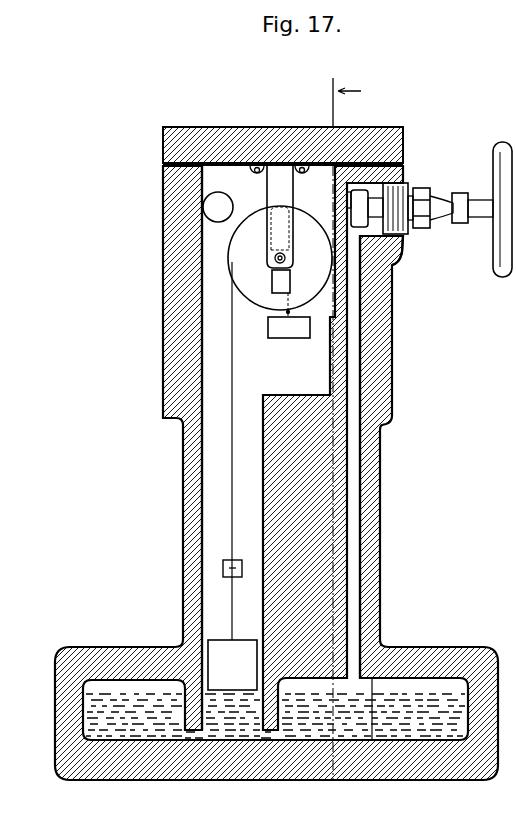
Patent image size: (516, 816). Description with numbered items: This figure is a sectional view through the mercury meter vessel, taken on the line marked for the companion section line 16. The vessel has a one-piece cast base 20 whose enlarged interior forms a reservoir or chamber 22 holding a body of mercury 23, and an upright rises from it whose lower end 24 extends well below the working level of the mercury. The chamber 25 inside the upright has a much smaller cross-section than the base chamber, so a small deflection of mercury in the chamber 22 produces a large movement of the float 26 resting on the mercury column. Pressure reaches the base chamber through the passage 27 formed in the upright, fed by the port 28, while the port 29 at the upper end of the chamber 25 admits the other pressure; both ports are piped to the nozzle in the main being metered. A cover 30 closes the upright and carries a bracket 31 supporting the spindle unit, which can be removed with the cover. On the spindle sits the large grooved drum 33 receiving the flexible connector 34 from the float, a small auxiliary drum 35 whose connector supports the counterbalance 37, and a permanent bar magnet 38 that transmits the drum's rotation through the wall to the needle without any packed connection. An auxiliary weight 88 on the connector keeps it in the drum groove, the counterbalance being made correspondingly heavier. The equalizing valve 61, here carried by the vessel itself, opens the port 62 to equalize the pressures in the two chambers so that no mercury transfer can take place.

The section line 16 is at (341, 422).
The base 20 is at (68, 752).
The reservoir or chamber 22 is at (389, 690).
The body of mercury 23 is at (425, 715).
The lower end of the upright 24 is at (185, 715).
The chamber in the upright 25 is at (215, 520).
The float 26 is at (226, 650).
The passage 27 is at (357, 416).
The port 28 is at (400, 243).
The port 29 is at (212, 205).
The cover 30 is at (263, 140).
The bracket 31 is at (270, 187).
The wheel or drum 33 is at (280, 258).
The flexible connector 34 is at (233, 384).
The auxiliary drum 35 is at (275, 258).
The counterbalance 37 is at (289, 327).
The permanent bar magnet 38 is at (274, 288).
The equalizing valve 61 is at (398, 190).
The port 62 is at (350, 207).
The auxiliary weight 88 is at (223, 571).